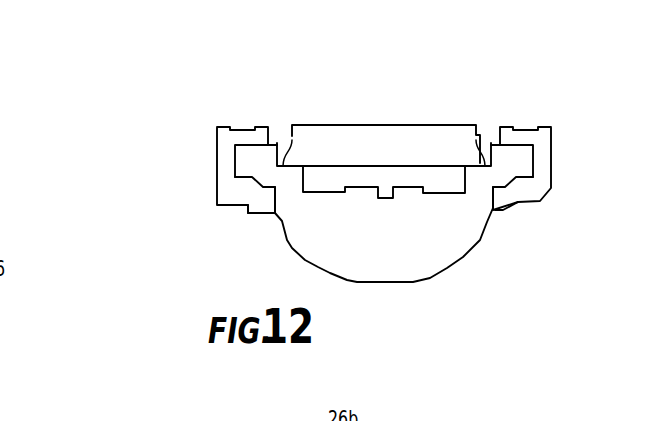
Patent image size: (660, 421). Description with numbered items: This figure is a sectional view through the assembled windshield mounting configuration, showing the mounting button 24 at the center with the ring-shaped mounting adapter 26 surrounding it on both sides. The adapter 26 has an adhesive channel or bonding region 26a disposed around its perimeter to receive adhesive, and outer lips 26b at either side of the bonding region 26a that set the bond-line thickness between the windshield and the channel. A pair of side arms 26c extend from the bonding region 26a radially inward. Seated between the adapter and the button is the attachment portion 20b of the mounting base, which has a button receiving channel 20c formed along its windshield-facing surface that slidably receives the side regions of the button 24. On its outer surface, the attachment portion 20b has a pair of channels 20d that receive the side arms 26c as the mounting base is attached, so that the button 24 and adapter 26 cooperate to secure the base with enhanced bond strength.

The attachment portion 20b is at (436, 272).
The button receiving channel 20c is at (277, 166).
The channels 20d is at (258, 183).
The mounting button 24 is at (393, 121).
The mounting adapter 26 is at (206, 180).
The bonding region 26a is at (240, 127).
The outer lips 26b is at (222, 128).
The side arms 26c is at (262, 209).